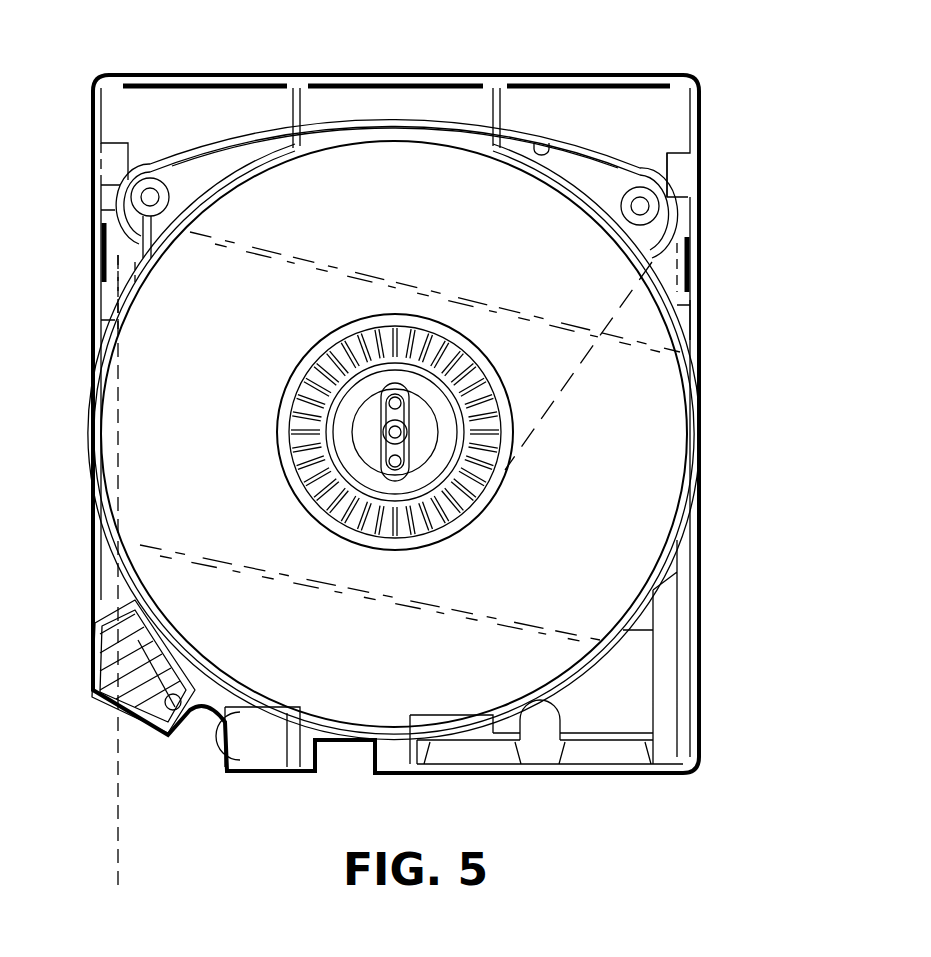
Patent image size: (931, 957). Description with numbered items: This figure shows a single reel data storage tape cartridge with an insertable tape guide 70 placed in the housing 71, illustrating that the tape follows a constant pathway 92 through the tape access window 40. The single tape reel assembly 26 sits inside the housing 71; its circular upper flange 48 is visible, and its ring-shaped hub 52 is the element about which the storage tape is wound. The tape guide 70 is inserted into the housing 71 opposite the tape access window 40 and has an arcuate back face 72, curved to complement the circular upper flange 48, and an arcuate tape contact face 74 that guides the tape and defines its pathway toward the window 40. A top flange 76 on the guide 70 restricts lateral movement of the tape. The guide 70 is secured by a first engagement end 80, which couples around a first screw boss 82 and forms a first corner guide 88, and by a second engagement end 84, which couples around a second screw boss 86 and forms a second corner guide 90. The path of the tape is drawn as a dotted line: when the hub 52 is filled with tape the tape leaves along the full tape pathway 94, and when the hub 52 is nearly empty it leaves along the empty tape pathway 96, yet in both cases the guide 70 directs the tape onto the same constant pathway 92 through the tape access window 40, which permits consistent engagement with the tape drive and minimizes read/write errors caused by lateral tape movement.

The single tape reel assembly 26 is at (150, 437).
The tape access window 40 is at (200, 750).
The upper flange 48 is at (650, 458).
The hub 52 is at (300, 478).
The insertable tape guide 70 is at (388, 110).
The housing 71 is at (663, 779).
The arcuate back face 72 is at (545, 140).
The arcuate tape contact face 74 is at (450, 116).
The top flange 76 is at (648, 172).
The first engagement end 80 is at (672, 243).
The first screw boss 82 is at (662, 213).
The second engagement end 84 is at (120, 233).
The second screw boss 86 is at (128, 172).
The first corner guide 88 is at (677, 223).
The second corner guide 90 is at (115, 210).
The constant pathway 92 is at (118, 840).
The full tape pathway 94 is at (677, 307).
The empty tape pathway 96 is at (590, 372).